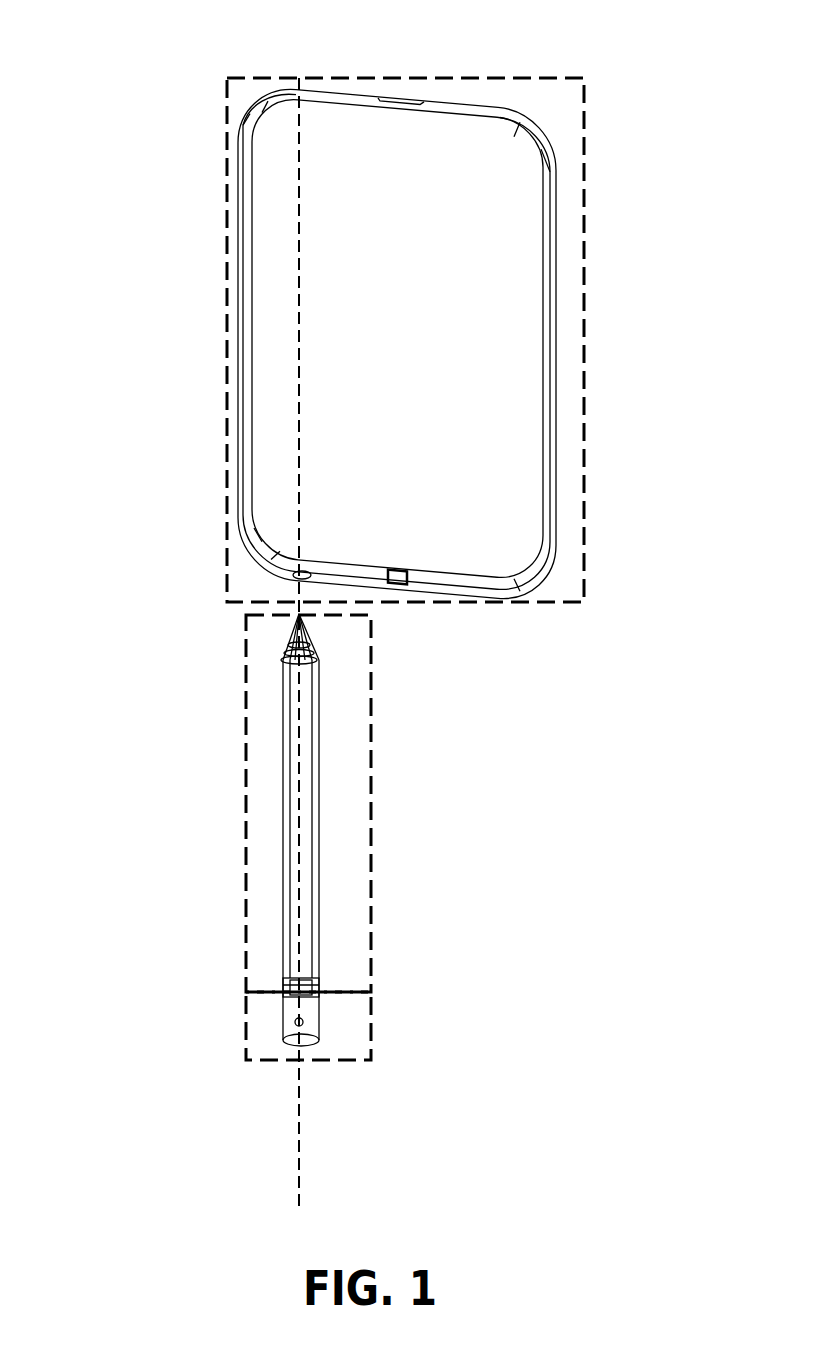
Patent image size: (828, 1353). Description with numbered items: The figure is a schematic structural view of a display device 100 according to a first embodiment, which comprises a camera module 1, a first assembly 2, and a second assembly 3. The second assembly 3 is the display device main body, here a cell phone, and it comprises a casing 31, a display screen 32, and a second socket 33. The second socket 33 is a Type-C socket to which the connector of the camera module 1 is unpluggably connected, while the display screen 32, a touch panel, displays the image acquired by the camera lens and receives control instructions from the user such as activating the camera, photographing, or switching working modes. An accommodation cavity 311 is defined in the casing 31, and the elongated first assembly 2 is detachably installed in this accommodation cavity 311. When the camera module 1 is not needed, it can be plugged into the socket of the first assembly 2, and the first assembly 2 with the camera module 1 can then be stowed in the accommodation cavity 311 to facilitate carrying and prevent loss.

The display device 100 is at (148, 71).
The camera module 1 is at (359, 1002).
The first assembly 2 is at (358, 827).
The second assembly 3 is at (424, 368).
The casing 31 is at (466, 338).
The display screen 32 is at (476, 338).
The second socket 33 is at (427, 614).
The accommodation cavity 311 is at (230, 608).